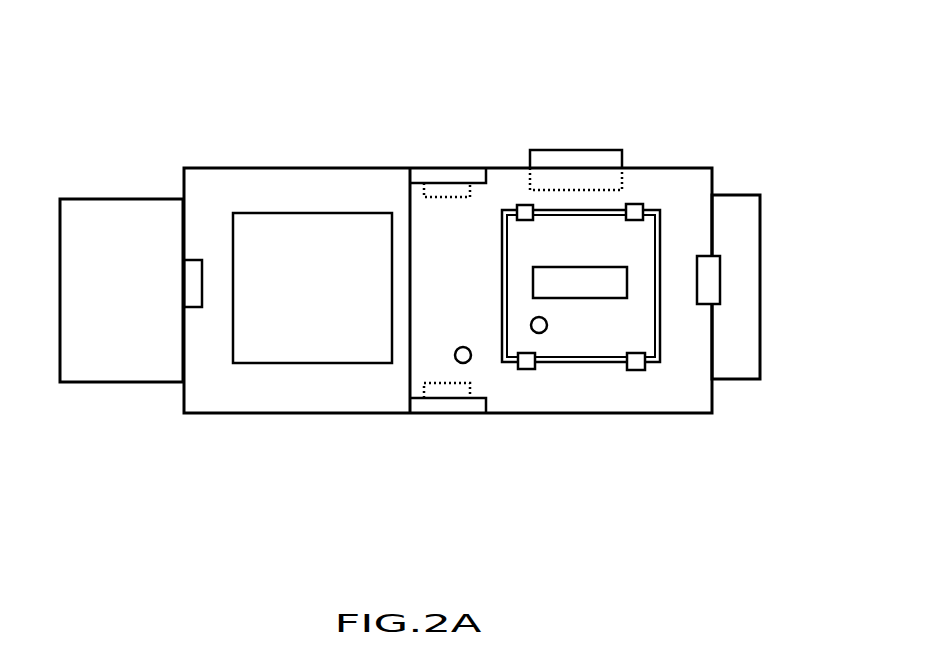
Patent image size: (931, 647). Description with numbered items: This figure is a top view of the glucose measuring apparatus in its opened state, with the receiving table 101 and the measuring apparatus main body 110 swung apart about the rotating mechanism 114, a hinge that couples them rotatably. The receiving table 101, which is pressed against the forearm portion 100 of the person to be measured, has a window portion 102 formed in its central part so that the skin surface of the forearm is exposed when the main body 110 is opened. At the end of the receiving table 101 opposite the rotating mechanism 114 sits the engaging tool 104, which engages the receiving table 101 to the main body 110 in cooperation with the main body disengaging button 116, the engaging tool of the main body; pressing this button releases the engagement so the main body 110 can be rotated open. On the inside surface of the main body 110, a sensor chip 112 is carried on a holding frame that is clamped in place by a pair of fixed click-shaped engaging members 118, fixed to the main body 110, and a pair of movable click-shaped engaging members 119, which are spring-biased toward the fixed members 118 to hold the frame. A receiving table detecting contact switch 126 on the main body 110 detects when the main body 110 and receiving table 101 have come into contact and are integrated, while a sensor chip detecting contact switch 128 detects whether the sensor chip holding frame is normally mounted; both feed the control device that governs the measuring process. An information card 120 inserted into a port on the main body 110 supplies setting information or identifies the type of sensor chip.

The forearm portion 100 is at (112, 372).
The receiving table 101 is at (244, 178).
The window portion 102 is at (320, 235).
The engaging tool 104 is at (188, 277).
The measuring apparatus main body 110 is at (643, 185).
The sensor chip 112 is at (587, 343).
The rotating mechanism 114 is at (443, 178).
The main body disengaging button 116 is at (708, 283).
The fixed click-shaped engaging member 118 is at (527, 370).
The movable click-shaped engaging member 119 is at (519, 205).
The information card 120 is at (585, 157).
The receiving table detecting contact switch 126 is at (463, 364).
The sensor chip detecting contact switch 128 is at (533, 331).